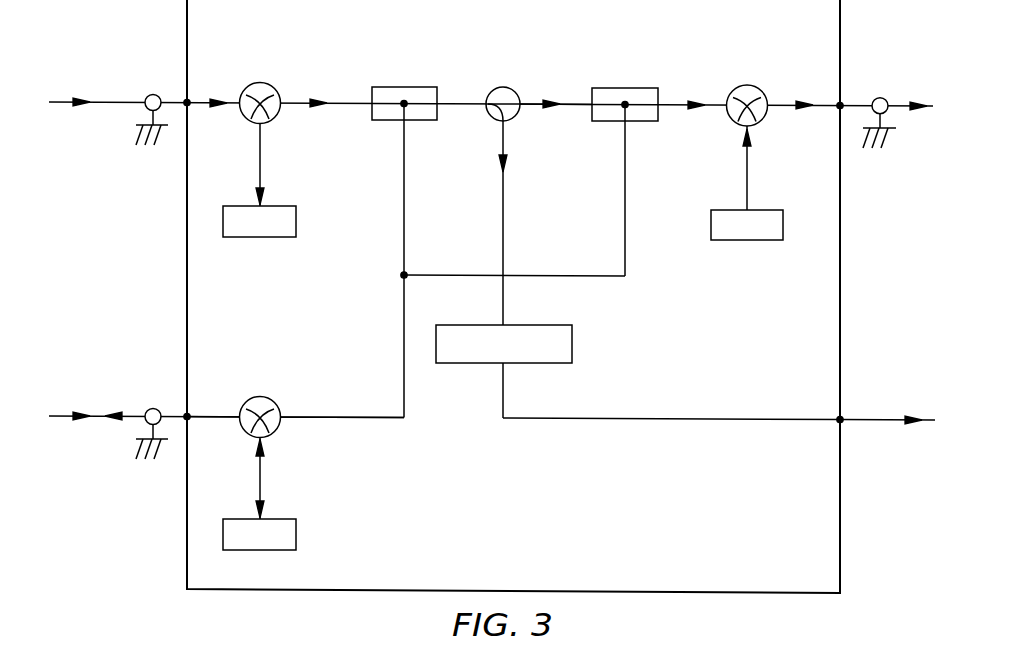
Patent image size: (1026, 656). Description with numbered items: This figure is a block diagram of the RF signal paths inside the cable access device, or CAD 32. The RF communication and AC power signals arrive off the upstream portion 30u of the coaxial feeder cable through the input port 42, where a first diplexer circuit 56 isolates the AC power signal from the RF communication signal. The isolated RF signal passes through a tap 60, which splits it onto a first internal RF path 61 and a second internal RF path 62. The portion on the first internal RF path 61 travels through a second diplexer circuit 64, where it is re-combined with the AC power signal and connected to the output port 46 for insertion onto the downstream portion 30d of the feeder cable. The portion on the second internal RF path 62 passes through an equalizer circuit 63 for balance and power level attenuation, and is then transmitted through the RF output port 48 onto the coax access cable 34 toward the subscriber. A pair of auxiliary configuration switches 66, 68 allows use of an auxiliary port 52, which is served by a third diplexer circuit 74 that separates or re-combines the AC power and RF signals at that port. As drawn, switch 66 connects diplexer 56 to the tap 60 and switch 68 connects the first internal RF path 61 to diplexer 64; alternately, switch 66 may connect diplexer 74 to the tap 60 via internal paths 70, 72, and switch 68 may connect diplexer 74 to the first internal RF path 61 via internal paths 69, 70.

The upstream portion of coaxial feeder cable 30u is at (116, 101).
The downstream portion of coaxial feeder cable 30d is at (858, 100).
The CAD 32 is at (841, 316).
The coax access cable 34 is at (880, 422).
The input port 42 is at (188, 108).
The output port 46 is at (837, 107).
The RF output port 48 is at (843, 415).
The auxiliary port 52 is at (185, 411).
The first diplexer circuit 56 is at (274, 83).
The tap 60 is at (494, 87).
The first internal RF path 61 is at (533, 101).
The second internal RF path 62 is at (505, 133).
The equalizer circuit 63 is at (573, 342).
The second diplexer circuit 64 is at (766, 91).
The auxiliary configuration switch 66 is at (405, 87).
The auxiliary configuration switch 68 is at (630, 88).
The internal path 69 is at (626, 263).
The internal path 70 is at (406, 406).
The internal path 72 is at (403, 162).
The third diplexer circuit 74 is at (289, 378).